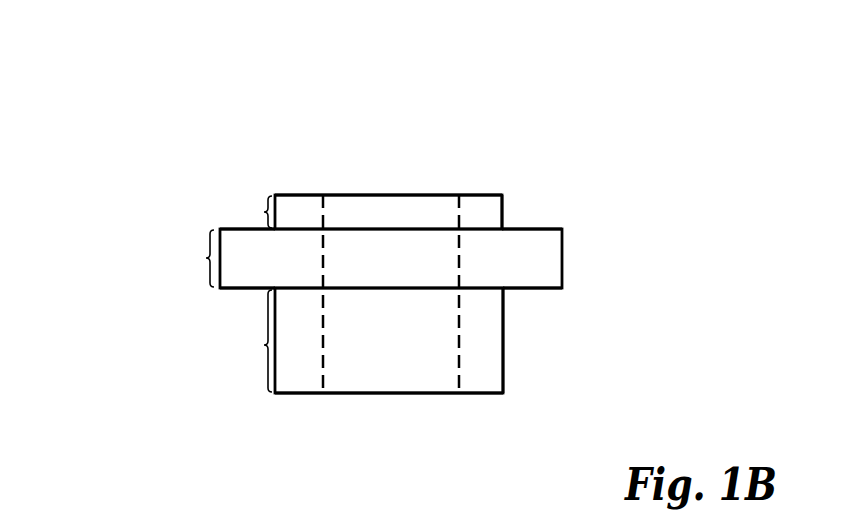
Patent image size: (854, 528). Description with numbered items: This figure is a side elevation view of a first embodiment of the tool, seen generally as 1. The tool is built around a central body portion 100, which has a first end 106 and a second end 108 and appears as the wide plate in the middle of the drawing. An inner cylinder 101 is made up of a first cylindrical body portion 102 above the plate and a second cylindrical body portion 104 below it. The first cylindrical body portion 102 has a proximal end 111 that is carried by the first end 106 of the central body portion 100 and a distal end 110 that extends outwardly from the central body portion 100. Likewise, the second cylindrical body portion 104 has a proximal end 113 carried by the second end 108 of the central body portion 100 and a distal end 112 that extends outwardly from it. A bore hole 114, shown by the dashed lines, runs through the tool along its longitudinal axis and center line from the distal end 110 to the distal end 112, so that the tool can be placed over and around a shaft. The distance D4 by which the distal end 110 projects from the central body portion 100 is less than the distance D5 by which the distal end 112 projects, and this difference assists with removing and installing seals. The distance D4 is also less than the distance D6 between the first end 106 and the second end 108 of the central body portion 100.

The first embodiment of the invention 1 is at (376, 267).
The central body portion 100 is at (572, 255).
The inner cylinder 101 is at (478, 182).
The first cylindrical body portion 102 is at (516, 204).
The second cylindrical body portion 104 is at (516, 362).
The first end 106 is at (233, 228).
The second end 108 is at (232, 290).
The distal end 110 is at (305, 192).
The proximal end 111 is at (516, 222).
The distal end 112 is at (298, 395).
The proximal end 113 is at (516, 292).
The bore hole 114 is at (388, 182).
The distance D4 is at (262, 212).
The distance D5 is at (266, 345).
The distance D6 is at (205, 258).